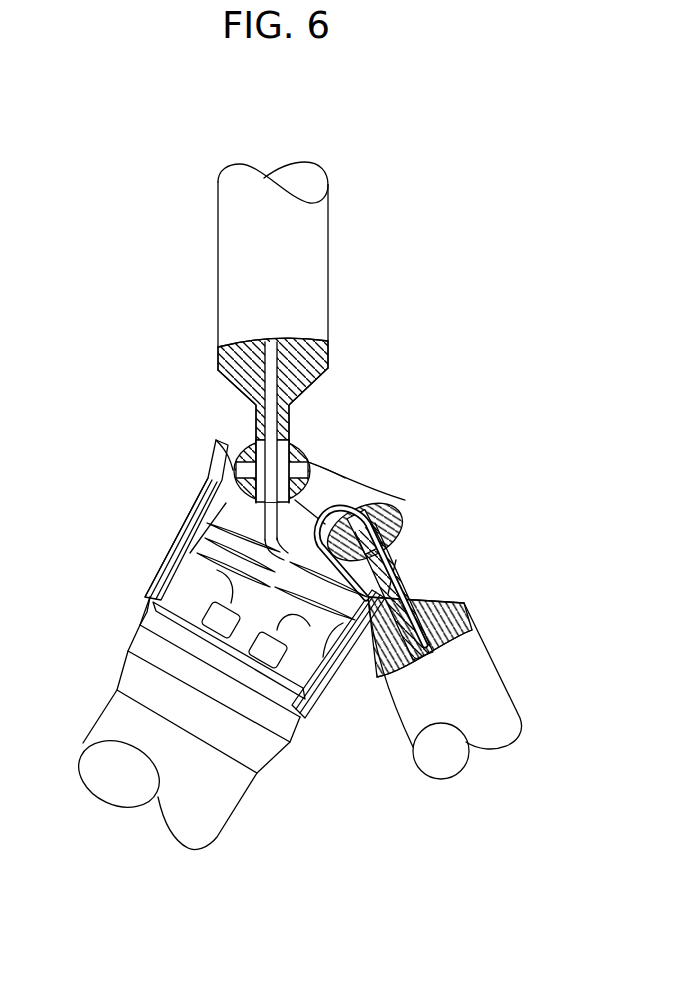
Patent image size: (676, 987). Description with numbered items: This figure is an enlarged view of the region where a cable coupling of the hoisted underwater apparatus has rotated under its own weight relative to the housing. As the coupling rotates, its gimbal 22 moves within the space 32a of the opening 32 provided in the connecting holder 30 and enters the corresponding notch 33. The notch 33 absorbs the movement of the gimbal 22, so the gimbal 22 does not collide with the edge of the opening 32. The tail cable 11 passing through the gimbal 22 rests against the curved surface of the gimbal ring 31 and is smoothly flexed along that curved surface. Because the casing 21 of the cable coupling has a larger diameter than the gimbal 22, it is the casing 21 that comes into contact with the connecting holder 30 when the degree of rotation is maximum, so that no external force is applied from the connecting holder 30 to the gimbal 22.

The tail cable 11 is at (205, 577).
The casing 21 is at (322, 287).
The gimbal 22 is at (256, 406).
The connecting holder 30 is at (155, 543).
The gimbal ring 31 is at (243, 452).
The opening 32 is at (352, 483).
The space 32a is at (318, 487).
The notch 33 is at (215, 483).